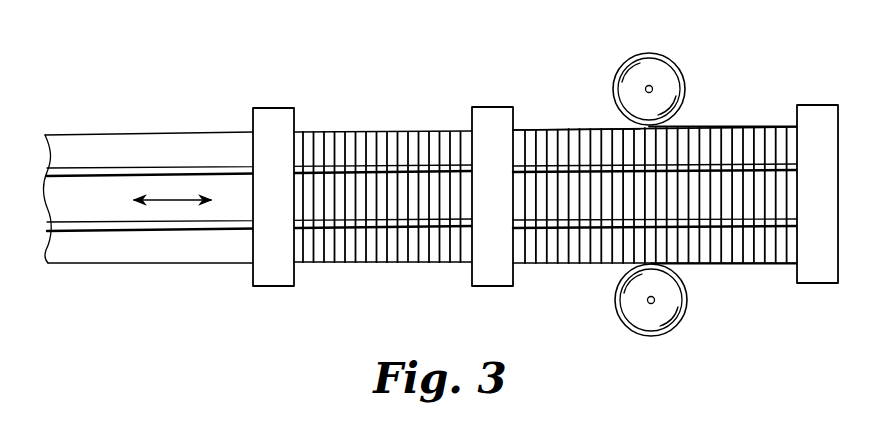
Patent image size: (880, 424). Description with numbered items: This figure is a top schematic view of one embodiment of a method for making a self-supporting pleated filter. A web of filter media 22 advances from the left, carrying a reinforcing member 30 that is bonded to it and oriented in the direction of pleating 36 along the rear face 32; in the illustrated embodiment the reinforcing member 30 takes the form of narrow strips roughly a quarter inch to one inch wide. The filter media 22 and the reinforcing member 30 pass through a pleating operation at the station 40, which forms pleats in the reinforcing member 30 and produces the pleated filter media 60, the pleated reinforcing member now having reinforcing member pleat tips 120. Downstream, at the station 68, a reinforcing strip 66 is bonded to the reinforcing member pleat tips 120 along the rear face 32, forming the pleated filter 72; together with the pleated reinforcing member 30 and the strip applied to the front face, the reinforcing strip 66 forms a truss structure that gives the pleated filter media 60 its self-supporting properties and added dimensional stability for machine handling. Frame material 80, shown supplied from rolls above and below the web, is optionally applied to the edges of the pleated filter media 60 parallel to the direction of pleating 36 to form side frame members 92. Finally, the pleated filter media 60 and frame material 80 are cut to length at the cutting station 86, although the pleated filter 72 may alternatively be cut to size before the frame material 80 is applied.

The filter media 22 is at (65, 256).
The reinforcing member 30 is at (95, 226).
The rear face 32 is at (151, 257).
The direction of pleating 36 is at (166, 199).
The station 40 is at (265, 113).
The pleated filter media 60 is at (342, 264).
The reinforcing strip 66 is at (573, 222).
The station 68 is at (489, 106).
The pleated filter 72 is at (593, 128).
The frame material 80 is at (668, 65).
The cutting station 86 is at (815, 112).
The side frame members 92 is at (737, 126).
The reinforcing member pleat tips 120 is at (358, 175).